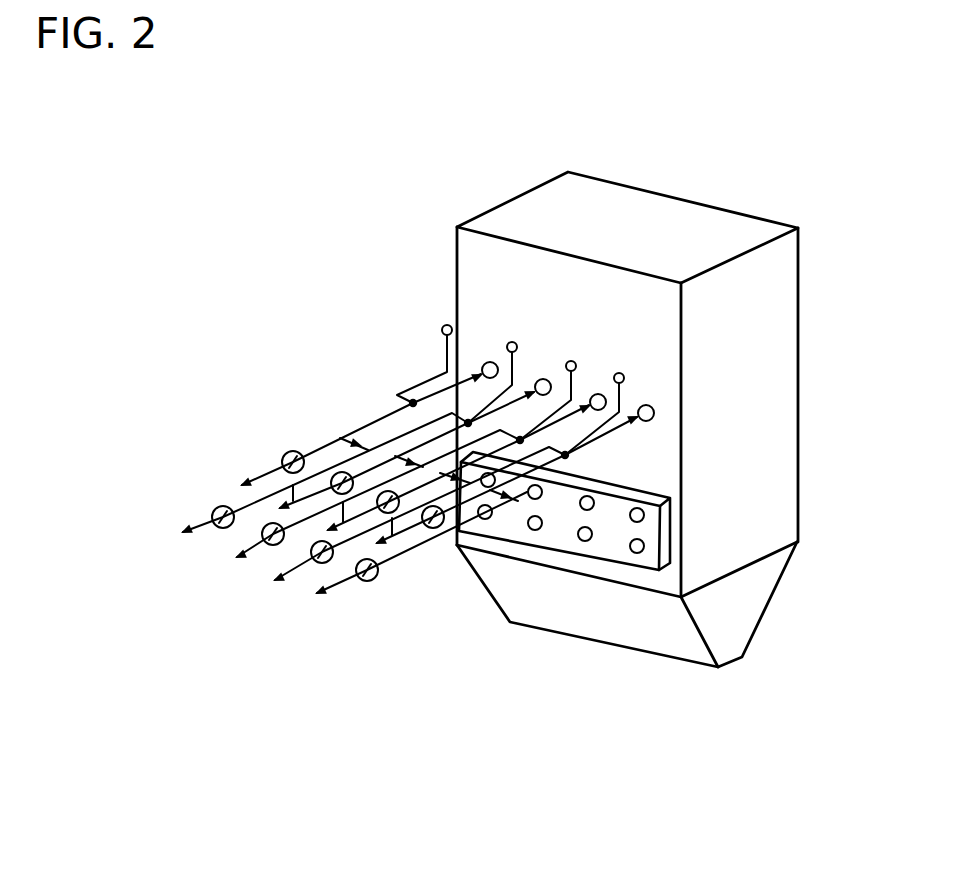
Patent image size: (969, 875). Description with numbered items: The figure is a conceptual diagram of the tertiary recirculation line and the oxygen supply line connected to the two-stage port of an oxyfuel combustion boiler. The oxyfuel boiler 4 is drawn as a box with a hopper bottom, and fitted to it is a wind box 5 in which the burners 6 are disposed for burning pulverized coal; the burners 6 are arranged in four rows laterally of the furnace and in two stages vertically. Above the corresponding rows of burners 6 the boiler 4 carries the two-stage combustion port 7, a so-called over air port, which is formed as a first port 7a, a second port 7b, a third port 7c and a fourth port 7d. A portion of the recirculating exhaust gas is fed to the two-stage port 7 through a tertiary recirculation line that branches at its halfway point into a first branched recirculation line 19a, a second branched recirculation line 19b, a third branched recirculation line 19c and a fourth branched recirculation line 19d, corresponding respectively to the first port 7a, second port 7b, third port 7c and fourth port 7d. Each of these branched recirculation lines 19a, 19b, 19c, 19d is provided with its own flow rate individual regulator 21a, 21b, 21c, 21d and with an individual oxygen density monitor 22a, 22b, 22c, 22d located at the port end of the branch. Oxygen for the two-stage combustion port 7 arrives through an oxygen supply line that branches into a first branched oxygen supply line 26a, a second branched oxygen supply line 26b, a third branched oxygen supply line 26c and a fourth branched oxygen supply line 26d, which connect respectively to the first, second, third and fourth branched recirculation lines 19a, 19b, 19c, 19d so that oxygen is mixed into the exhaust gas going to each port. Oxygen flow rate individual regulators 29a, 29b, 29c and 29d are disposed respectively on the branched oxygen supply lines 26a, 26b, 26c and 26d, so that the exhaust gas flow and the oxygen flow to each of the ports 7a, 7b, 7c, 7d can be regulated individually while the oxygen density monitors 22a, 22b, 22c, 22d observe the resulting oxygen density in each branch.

The oxyfuel boiler 4 is at (666, 206).
The wind box 5 is at (652, 560).
The burners 6 is at (587, 510).
The two-stage combustion port 7 is at (525, 392).
The first port 7a is at (648, 404).
The second port 7b is at (598, 393).
The third port 7c is at (543, 378).
The fourth port 7d is at (490, 361).
The oxygen density monitor 22a is at (620, 372).
The oxygen density monitor 22b is at (571, 360).
The oxygen density monitor 22c is at (512, 341).
The oxygen density monitor 22d is at (447, 324).
The flow rate individual regulator 21a is at (447, 538).
The flow rate individual regulator 21b is at (402, 528).
The flow rate individual regulator 21c is at (341, 472).
The flow rate individual regulator 21d is at (292, 450).
The first branched recirculation line 19a is at (398, 537).
The second branched recirculation line 19b is at (392, 530).
The third branched recirculation line 19c is at (248, 482).
The fourth branched recirculation line 19d is at (268, 470).
The first branched oxygen supply line 26a is at (343, 582).
The second branched oxygen supply line 26b is at (298, 565).
The third branched oxygen supply line 26c is at (246, 553).
The fourth branched oxygen supply line 26d is at (205, 531).
The oxygen flow rate individual regulator 29a is at (360, 582).
The oxygen flow rate individual regulator 29b is at (315, 564).
The oxygen flow rate individual regulator 29c is at (265, 546).
The oxygen flow rate individual regulator 29d is at (220, 529).